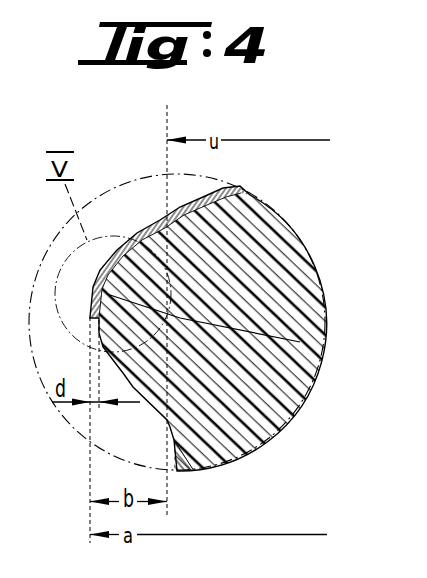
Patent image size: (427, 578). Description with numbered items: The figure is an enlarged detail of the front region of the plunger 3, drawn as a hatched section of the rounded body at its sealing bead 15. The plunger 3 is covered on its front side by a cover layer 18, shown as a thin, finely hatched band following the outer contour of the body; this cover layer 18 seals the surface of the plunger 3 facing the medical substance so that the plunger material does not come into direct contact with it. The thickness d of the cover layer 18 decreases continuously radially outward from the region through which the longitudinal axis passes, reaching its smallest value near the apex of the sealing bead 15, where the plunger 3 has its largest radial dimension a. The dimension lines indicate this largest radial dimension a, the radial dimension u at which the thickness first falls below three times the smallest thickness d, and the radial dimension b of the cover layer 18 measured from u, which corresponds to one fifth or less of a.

The plunger 3 is at (320, 239).
The sealing bead 15 is at (300, 342).
The cover layer 18 is at (223, 192).